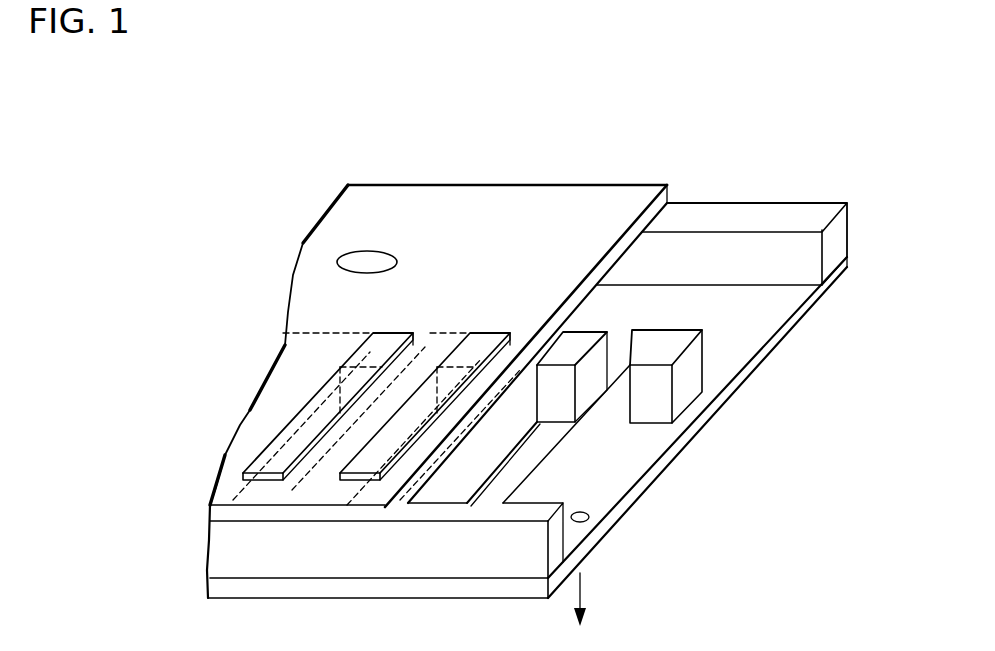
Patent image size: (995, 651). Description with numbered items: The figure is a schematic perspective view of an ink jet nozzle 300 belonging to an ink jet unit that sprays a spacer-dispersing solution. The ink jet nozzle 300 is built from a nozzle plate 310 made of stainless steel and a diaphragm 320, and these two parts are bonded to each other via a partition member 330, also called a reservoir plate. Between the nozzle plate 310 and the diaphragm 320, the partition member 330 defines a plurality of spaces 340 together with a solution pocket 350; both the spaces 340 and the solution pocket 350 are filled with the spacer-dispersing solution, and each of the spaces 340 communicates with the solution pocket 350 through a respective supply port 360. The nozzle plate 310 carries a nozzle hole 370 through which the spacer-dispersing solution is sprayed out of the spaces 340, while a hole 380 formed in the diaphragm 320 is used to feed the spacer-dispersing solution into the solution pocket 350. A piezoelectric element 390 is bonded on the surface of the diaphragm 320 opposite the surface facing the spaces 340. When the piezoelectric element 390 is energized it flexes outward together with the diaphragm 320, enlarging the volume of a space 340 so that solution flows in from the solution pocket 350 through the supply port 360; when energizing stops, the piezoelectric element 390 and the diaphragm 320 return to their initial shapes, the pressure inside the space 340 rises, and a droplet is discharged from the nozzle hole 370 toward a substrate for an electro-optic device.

The ink jet nozzle 300 is at (447, 160).
The nozzle plate 310 is at (758, 355).
The diaphragm 320 is at (378, 504).
The partition member (reservoir plate) 330 is at (597, 447).
The spaces 340 is at (512, 407).
The solution pocket 350 is at (742, 297).
The supply port 360 is at (593, 352).
The nozzle hole 370 is at (588, 513).
The hole 380 is at (353, 265).
The piezoelectric element 390 is at (290, 443).